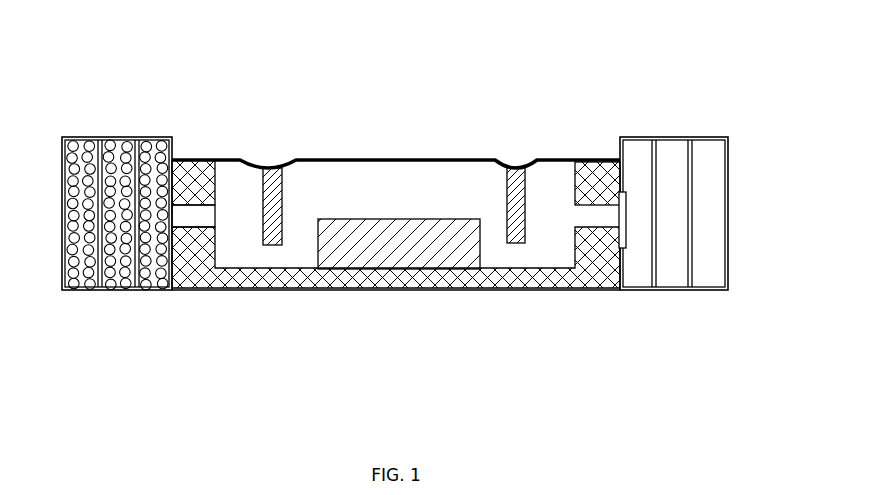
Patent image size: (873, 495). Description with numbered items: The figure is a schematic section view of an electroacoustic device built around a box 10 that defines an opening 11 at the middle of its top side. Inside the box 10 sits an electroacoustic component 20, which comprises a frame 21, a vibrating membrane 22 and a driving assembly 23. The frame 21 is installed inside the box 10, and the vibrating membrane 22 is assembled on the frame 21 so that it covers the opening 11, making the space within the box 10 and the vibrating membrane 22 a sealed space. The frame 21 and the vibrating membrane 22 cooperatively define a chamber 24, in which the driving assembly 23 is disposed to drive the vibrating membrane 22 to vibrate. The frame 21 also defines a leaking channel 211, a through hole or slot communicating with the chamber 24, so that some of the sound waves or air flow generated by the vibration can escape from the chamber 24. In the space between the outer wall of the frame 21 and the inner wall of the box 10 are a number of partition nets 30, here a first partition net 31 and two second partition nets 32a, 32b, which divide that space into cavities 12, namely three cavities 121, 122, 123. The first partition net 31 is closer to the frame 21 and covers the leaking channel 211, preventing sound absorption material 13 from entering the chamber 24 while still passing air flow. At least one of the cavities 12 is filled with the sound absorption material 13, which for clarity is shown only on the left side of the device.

The box 10 is at (62, 173).
The opening 11 is at (535, 142).
The cavities 12 is at (692, 70).
The cavity 121 is at (640, 182).
The cavity 122 is at (677, 182).
The cavity 123 is at (707, 187).
The sound absorption material 13 is at (117, 157).
The electroacoustic component 20 is at (205, 96).
The frame 21 is at (188, 170).
The leaking channel 211 is at (185, 213).
The vibrating membrane 22 is at (245, 159).
The driving assembly 23 is at (368, 220).
The chamber 24 is at (397, 182).
The partition nets 30 is at (630, 340).
The first partition net 31 is at (625, 245).
The second partition net 32a is at (656, 260).
The second partition net 32b is at (692, 260).